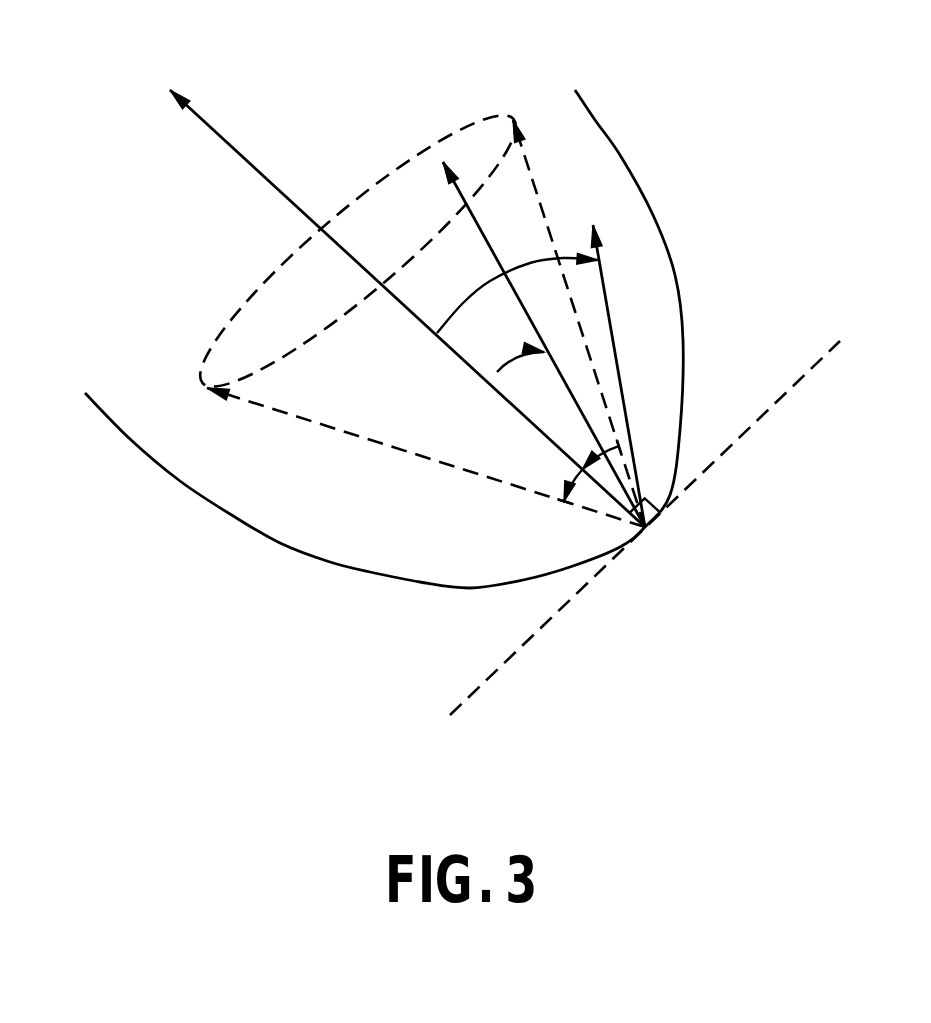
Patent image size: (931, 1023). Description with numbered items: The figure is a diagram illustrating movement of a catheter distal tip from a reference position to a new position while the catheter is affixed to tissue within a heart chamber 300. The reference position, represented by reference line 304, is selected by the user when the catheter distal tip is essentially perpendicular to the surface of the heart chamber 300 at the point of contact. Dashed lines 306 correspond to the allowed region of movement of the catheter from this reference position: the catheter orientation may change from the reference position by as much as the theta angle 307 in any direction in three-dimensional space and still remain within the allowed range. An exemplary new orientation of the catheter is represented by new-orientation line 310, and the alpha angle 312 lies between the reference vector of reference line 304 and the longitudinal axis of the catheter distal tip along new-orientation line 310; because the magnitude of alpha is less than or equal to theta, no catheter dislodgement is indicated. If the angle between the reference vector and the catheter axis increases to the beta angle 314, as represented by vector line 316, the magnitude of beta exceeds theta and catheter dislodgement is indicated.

The heart chamber 300 is at (372, 572).
The line representing the catheter reference position 304 is at (223, 140).
The dashed lines 306 is at (425, 155).
The angle θ 307 is at (582, 472).
The line representing the new catheter orientation 310 is at (473, 217).
The angle α 312 is at (493, 382).
The angle β 314 is at (483, 290).
The line representing the catheter vector at angle β 316 is at (603, 277).